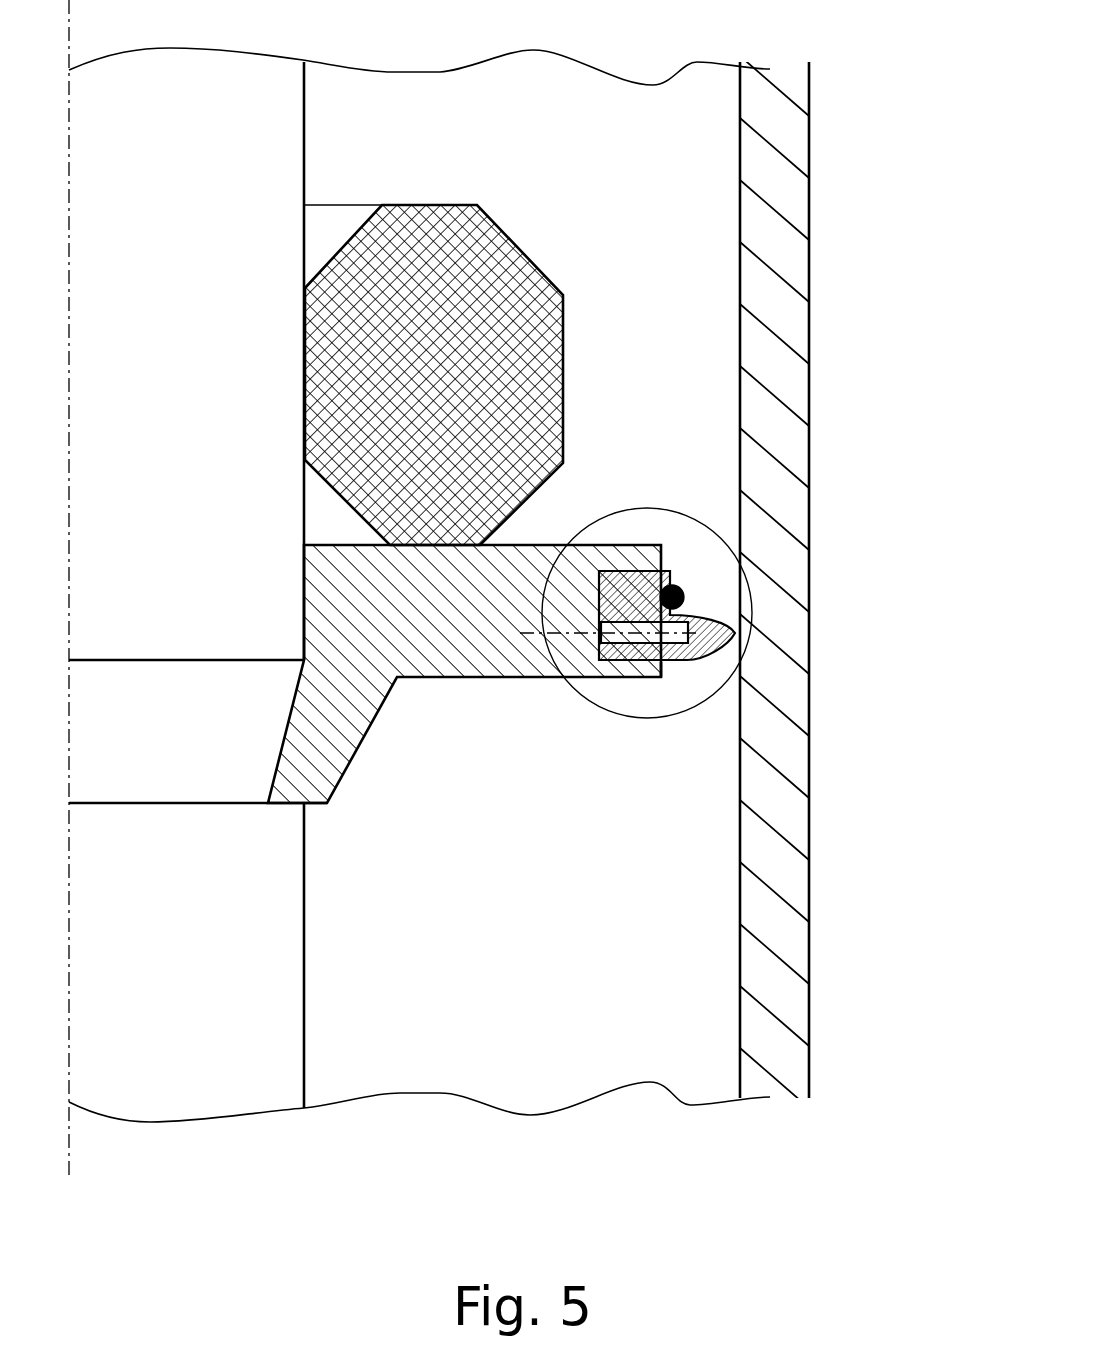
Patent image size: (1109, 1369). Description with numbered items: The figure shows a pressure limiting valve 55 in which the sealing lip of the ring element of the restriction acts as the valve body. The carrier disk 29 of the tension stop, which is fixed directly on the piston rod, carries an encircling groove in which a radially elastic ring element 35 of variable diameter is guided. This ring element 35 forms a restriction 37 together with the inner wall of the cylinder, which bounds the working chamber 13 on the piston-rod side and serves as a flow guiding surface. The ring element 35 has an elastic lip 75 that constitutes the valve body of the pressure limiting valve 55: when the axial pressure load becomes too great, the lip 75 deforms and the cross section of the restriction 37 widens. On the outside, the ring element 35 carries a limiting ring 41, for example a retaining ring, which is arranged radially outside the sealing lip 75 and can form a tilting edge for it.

The working chamber on the piston-rod side 13 is at (576, 156).
The carrier disk 29 is at (415, 613).
The ring element 35 is at (673, 662).
The restriction 37 is at (657, 505).
The limiting ring 41 is at (684, 590).
The pressure limiting valve 55 is at (631, 743).
The elastic lip 75 is at (732, 628).